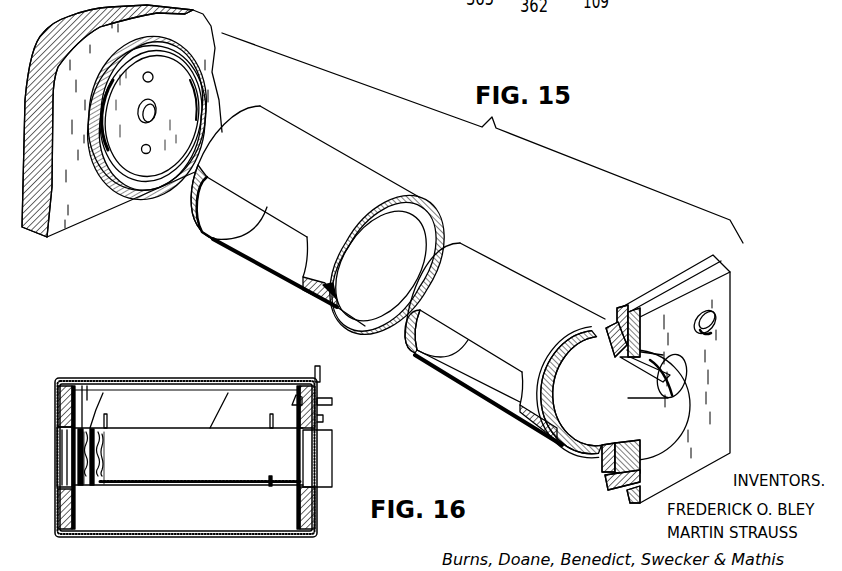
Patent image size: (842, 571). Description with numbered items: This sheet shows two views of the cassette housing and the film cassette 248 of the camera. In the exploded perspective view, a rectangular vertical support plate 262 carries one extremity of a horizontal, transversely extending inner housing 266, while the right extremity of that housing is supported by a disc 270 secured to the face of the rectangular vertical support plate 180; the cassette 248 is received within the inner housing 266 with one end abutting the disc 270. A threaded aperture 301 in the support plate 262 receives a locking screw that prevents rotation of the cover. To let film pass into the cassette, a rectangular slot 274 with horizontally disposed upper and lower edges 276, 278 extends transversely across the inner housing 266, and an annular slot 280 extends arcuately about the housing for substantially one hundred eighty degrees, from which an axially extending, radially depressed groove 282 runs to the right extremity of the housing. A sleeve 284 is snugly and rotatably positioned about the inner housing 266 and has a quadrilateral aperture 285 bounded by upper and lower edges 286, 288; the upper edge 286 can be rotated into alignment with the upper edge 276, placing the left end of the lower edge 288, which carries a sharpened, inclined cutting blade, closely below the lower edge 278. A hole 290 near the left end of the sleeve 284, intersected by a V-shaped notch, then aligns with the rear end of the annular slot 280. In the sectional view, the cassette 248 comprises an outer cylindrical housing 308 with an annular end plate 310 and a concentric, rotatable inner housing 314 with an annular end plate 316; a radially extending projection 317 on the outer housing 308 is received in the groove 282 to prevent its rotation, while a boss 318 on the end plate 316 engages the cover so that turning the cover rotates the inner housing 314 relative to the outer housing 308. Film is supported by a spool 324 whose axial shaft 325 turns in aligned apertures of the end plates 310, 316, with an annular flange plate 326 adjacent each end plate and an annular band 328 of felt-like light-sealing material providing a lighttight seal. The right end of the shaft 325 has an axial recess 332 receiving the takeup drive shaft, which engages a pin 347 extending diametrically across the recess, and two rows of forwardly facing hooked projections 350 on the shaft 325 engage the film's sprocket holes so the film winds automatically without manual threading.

In FIG. 15, the support plate 180 is at (187, 27).
In FIG. 15, the disc 270 is at (180, 90).
In FIG. 15, the sleeve 284 is at (318, 221).
In FIG. 15, the quadrilateral aperture 285 is at (222, 205).
In FIG. 15, the upper edge 286 is at (283, 226).
In FIG. 15, the lower edge 288 is at (250, 258).
In FIG. 15, the hole 290 is at (326, 302).
In FIG. 15, the inner housing 266 is at (505, 344).
In FIG. 15, the rectangular slot 274 is at (430, 330).
In FIG. 15, the upper edge 276 is at (497, 367).
In FIG. 15, the lower edge 278 is at (487, 398).
In FIG. 15, the annular slot 280 is at (587, 327).
In FIG. 15, the groove 282 is at (673, 390).
In FIG. 15, the support plate 262 is at (692, 379).
In FIG. 15, the threaded aperture 301 is at (708, 336).
In FIG. 16, the cassette 248 is at (155, 378).
In FIG. 16, the annular end plate 310 is at (58, 403).
In FIG. 16, the annular flange plate 326 is at (88, 380).
In FIG. 16, the axial recess 332 is at (103, 393).
In FIG. 16, the cylindrical housing 308 is at (196, 385).
In FIG. 16, the spool 324 is at (250, 382).
In FIG. 16, the radially extending projection 317 is at (320, 373).
In FIG. 16, the boss 318 is at (333, 400).
In FIG. 16, the annular end plate 316 is at (324, 419).
In FIG. 16, the annular band 328 is at (58, 510).
In FIG. 16, the hooked projections 350 is at (110, 421).
In FIG. 16, the pin 347 is at (90, 455).
In FIG. 16, the axial shaft 325 is at (148, 487).
In FIG. 16, the inner housing 314 is at (240, 528).